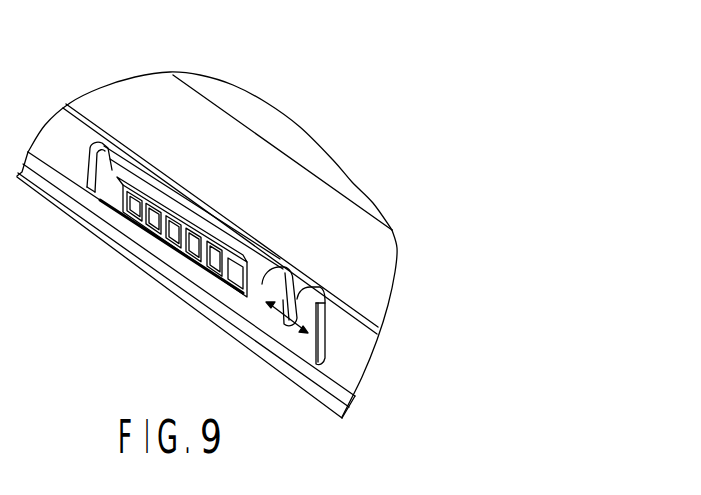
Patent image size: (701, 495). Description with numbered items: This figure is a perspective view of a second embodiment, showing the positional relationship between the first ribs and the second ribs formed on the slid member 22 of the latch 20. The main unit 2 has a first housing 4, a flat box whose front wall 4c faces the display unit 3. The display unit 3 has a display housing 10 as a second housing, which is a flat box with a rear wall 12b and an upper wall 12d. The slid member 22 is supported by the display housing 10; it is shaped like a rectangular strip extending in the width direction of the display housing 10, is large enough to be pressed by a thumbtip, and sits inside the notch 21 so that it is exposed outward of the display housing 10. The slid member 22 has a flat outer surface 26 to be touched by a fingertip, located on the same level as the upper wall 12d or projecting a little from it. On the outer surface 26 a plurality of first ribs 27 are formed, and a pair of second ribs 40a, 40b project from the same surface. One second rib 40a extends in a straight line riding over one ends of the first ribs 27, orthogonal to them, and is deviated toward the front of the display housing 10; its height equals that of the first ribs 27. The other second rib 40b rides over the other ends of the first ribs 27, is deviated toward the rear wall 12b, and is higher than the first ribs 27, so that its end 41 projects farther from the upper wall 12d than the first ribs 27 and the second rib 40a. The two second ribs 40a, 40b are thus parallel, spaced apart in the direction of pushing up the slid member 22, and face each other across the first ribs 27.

The main unit 2 is at (350, 407).
The display unit 3 is at (353, 181).
The first housing 4 is at (255, 348).
The front wall 4c is at (322, 378).
The display housing 10 is at (384, 238).
The rear wall 12b is at (187, 105).
The upper wall 12d is at (53, 135).
The latch 20 is at (98, 206).
The notch 21 is at (310, 292).
The slid member 22 is at (108, 163).
The outer surface 26 is at (264, 283).
The first ribs 27 is at (142, 197).
The second rib 40a is at (226, 289).
The second rib 40b is at (186, 222).
The end of the second rib 41 is at (140, 200).